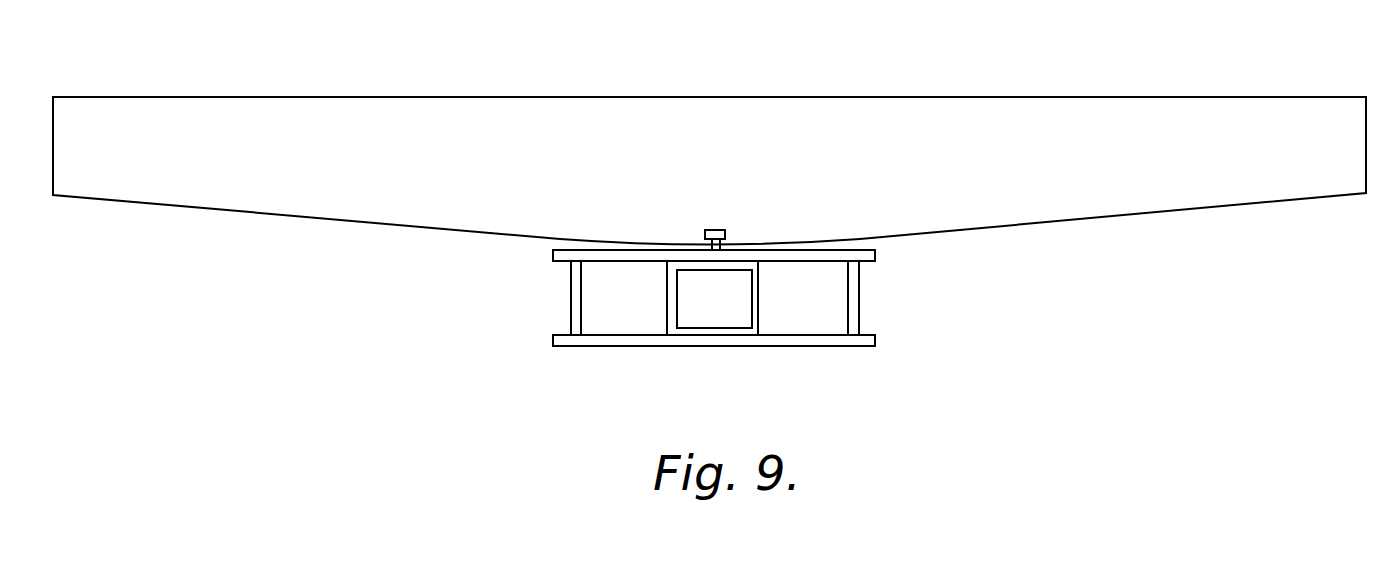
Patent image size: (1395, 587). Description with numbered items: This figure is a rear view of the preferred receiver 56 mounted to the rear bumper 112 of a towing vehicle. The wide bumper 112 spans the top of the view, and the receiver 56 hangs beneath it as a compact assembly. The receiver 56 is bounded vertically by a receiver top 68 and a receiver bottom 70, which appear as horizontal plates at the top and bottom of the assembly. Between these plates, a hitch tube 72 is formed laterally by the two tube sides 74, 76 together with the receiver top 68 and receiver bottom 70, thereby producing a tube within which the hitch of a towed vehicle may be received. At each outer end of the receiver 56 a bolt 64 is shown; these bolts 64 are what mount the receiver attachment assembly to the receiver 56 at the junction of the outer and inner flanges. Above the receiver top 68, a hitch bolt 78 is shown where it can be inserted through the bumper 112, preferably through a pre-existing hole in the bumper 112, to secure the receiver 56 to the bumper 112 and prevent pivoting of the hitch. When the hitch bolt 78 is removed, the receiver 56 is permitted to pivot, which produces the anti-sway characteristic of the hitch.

The bumper 112 is at (1197, 110).
The receiver 56 is at (700, 355).
The bolt 64 is at (570, 303).
The receiver top 68 is at (795, 256).
The receiver bottom 70 is at (805, 342).
The hitch tube 72 is at (728, 311).
The tube side 74 is at (668, 303).
The tube side 76 is at (758, 300).
The hitch bolt 78 is at (708, 230).